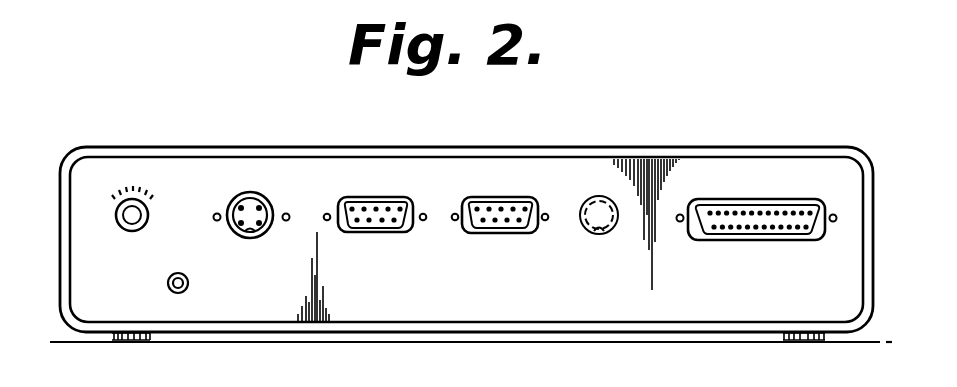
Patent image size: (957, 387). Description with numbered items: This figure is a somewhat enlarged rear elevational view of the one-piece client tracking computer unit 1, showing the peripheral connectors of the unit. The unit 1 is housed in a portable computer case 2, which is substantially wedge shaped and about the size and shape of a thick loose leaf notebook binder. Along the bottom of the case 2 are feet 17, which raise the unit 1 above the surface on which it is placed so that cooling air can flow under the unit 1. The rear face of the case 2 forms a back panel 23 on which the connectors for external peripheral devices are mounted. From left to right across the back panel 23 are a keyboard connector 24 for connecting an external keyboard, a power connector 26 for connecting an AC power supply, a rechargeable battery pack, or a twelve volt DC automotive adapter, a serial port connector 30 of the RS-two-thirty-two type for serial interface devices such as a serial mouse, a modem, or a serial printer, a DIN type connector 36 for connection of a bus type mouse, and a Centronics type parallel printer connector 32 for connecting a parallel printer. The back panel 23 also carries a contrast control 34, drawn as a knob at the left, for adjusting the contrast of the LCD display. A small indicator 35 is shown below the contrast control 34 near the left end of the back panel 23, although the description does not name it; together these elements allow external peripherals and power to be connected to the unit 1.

The client tracking computer unit 1 is at (181, 126).
The portable computer case 2 is at (760, 148).
The feet 17 is at (127, 338).
The back panel 23 is at (407, 308).
The keyboard connector 24 is at (253, 200).
The power connector 26 is at (380, 220).
The RS-232 serial port connector 30 is at (503, 222).
The Centronics type parallel printer connector 32 is at (728, 227).
The contrast control 34 is at (141, 229).
The indicator lamp 35 is at (188, 274).
The DIN type connector 36 is at (601, 236).